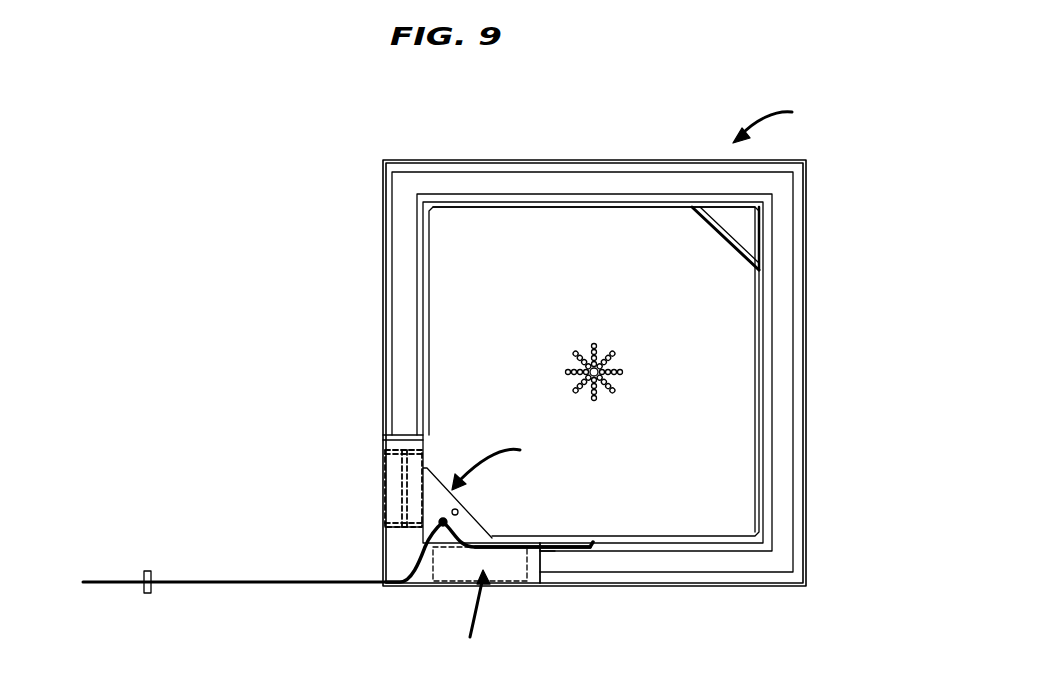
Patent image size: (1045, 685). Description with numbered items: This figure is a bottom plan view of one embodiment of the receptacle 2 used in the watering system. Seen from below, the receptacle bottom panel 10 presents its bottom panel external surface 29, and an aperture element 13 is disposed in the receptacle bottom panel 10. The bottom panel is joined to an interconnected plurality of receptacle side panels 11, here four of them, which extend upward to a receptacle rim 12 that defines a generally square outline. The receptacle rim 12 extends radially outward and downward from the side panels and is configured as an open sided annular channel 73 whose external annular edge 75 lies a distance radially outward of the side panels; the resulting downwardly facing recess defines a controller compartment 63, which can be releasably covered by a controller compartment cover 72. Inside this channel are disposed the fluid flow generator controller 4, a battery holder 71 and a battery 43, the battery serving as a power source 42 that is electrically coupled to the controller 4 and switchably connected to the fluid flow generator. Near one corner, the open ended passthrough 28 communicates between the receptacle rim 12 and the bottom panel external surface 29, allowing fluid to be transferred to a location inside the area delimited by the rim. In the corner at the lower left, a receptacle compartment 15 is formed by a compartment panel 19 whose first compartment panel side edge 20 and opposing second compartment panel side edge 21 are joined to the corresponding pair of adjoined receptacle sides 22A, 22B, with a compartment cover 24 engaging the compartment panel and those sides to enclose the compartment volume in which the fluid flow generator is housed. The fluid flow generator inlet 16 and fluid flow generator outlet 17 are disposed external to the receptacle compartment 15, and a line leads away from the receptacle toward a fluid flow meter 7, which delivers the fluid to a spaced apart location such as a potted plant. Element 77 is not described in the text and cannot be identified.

The receptacle 2 is at (771, 119).
The fluid flow generator controller 4 is at (475, 609).
The fluid flow meter 7 is at (147, 570).
The receptacle bottom panel 10 is at (570, 222).
The receptacle side panels 11 is at (636, 200).
The receptacle rim 12 is at (445, 185).
The aperture element 13 is at (577, 353).
The receptacle compartment 15 is at (498, 461).
The fluid flow generator inlet 16 is at (470, 518).
The fluid flow generator outlet 17 is at (440, 525).
The compartment panel 19 is at (500, 523).
The first compartment panel side edge 20 is at (430, 472).
The second compartment panel side edge 21 is at (520, 542).
The adjoined receptacle side 22A is at (423, 510).
The adjoined receptacle side 22B is at (447, 550).
The compartment cover 24 is at (430, 488).
The open ended passthrough 28 is at (731, 234).
The bottom panel external surface 29 is at (683, 294).
The power source 42 is at (388, 458).
The battery 43 is at (403, 488).
The controller compartment 63 is at (555, 563).
The battery holder 71 is at (410, 453).
The controller compartment cover 72 is at (532, 567).
The annular channel 73 is at (772, 465).
The external annular edge 75 is at (807, 542).
The power cable 77 is at (196, 581).